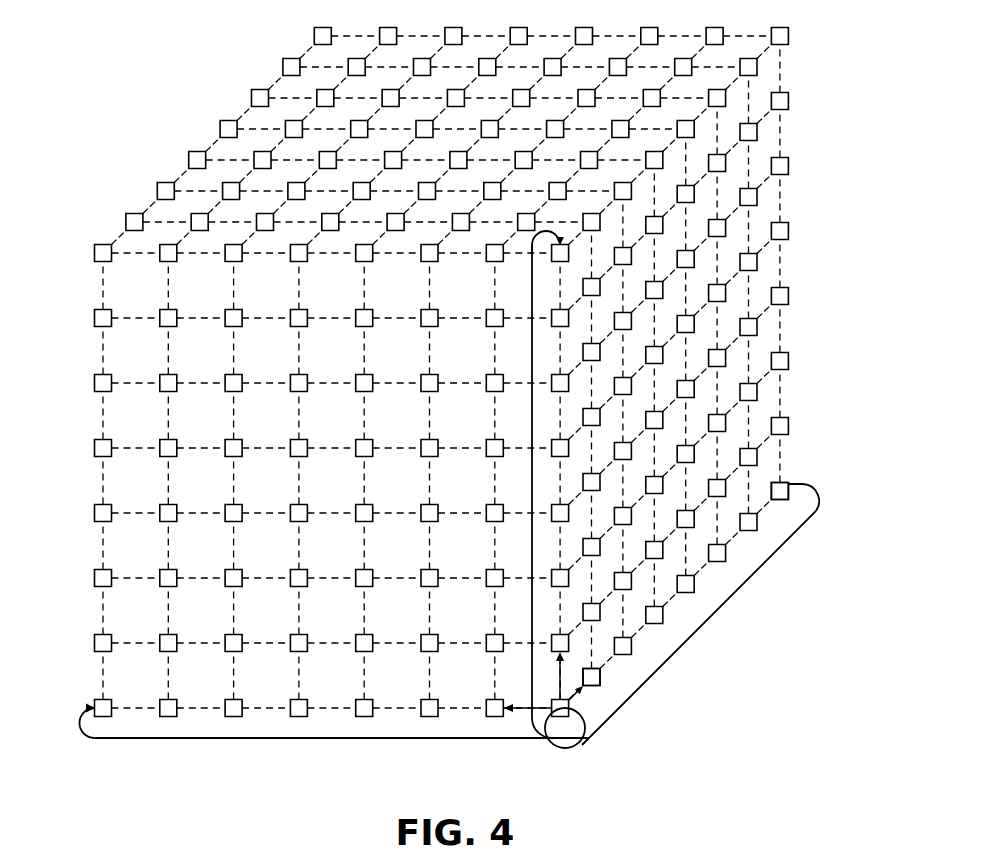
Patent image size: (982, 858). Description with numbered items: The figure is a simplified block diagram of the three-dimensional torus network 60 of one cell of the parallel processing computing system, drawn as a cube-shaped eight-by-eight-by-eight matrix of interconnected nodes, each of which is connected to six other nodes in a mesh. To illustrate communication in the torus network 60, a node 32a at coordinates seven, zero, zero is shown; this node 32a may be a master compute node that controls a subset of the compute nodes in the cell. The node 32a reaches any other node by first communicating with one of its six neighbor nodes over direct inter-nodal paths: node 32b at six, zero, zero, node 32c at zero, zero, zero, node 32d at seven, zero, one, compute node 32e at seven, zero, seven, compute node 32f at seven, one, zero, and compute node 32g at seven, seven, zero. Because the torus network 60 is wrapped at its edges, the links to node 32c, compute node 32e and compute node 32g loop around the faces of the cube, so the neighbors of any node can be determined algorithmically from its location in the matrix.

The three-dimensional torus network 60 is at (177, 83).
The node 32a is at (580, 746).
The neighbor node 32b is at (495, 717).
The neighbor node 32c is at (100, 699).
The neighbor node 32d is at (601, 678).
The compute node 32e is at (791, 481).
The compute node 32f is at (570, 643).
The compute node 32g is at (570, 253).